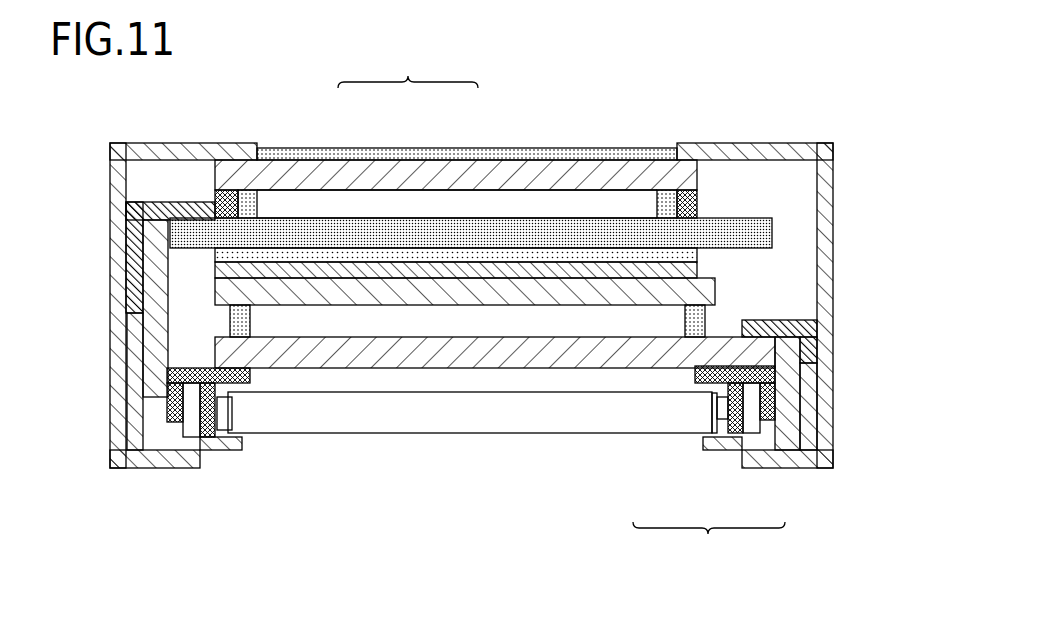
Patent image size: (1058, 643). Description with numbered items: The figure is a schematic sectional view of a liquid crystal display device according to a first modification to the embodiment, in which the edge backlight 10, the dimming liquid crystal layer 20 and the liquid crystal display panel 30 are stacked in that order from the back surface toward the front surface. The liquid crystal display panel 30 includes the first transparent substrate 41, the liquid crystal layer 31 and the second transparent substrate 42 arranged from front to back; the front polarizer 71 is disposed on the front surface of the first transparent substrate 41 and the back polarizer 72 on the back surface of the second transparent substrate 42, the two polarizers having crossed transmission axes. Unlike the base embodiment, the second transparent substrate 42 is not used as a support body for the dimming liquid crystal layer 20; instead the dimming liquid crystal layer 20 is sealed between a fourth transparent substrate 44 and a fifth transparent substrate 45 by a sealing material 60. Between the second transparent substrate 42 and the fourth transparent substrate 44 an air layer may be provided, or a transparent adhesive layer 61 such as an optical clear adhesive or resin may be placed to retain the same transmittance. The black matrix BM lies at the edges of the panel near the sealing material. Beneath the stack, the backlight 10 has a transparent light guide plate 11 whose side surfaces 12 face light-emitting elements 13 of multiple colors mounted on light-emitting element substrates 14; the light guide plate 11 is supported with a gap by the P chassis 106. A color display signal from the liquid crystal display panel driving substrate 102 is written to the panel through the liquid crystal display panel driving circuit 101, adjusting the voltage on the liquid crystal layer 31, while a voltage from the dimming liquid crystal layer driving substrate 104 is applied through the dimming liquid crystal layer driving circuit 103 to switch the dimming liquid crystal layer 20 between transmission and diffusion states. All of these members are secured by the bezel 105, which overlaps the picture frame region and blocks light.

The edge backlight 10 is at (709, 545).
The transparent light guide plate 11 is at (620, 420).
The side surfaces 12 is at (710, 440).
The light-emitting elements 13 is at (217, 437).
The light-emitting element substrates 14 is at (205, 437).
The dimming liquid crystal layer 20 is at (556, 228).
The liquid crystal display panel 30 is at (408, 66).
The liquid crystal layer 31 is at (372, 210).
The first transparent substrate 41 is at (335, 168).
The second transparent substrate 42 is at (417, 240).
The fourth transparent substrate 44 is at (455, 280).
The fifth transparent substrate 45 is at (510, 352).
The sealing material 60 is at (243, 190).
The transparent adhesive layer 61 is at (228, 268).
The front polarizer 71 is at (632, 153).
The back polarizer 72 is at (700, 257).
The liquid crystal display panel driving circuit 101 is at (128, 245).
The liquid crystal display panel driving substrate 102 is at (165, 373).
The dimming liquid crystal layer driving circuit 103 is at (790, 330).
The dimming liquid crystal layer driving substrate 104 is at (790, 380).
The bezel 105 is at (195, 452).
The P chassis 106 is at (192, 410).
The black matrix BM is at (215, 200).